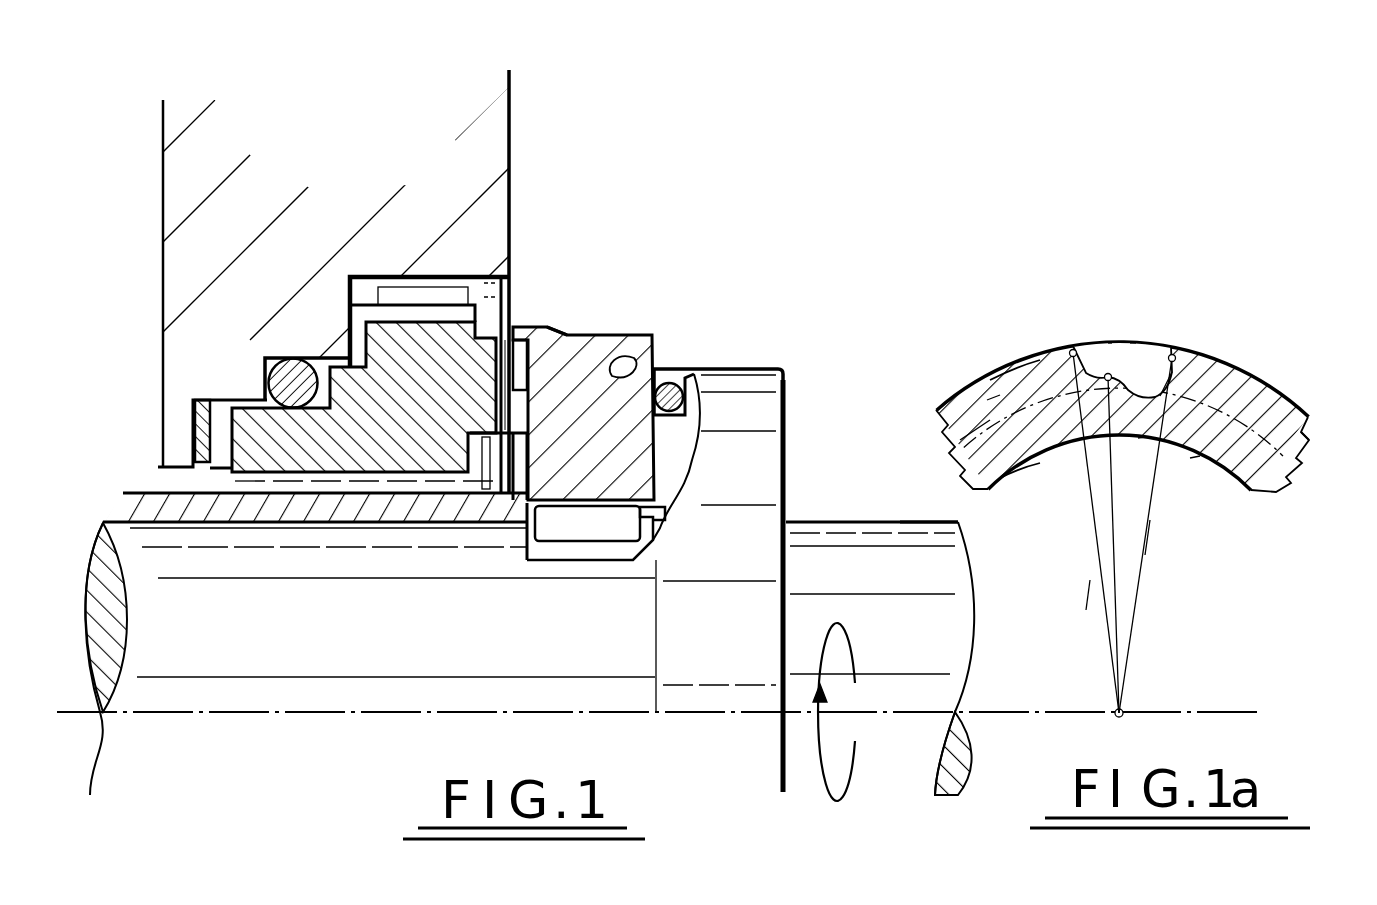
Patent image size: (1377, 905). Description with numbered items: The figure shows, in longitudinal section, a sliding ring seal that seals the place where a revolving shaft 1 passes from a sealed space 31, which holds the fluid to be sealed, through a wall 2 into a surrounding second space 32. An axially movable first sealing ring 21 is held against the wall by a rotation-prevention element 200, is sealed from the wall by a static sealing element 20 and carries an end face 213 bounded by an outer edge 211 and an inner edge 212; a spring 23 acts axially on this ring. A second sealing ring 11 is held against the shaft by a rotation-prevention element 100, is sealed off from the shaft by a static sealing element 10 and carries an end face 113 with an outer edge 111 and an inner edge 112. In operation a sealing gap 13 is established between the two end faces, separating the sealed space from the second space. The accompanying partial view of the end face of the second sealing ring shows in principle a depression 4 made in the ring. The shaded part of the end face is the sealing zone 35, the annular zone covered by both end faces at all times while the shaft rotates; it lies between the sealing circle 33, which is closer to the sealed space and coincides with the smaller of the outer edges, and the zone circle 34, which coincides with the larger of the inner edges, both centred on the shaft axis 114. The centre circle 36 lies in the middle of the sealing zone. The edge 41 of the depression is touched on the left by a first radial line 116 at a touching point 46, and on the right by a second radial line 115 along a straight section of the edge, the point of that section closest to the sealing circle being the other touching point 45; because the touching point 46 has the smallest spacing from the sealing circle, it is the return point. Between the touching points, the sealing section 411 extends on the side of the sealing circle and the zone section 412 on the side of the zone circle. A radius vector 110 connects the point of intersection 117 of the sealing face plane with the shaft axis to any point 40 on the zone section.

In FIG. 1, the revolving shaft 1 is at (150, 560).
In FIG. 1, the wall 2 is at (218, 230).
In FIG. 1, the depression 4 is at (610, 372).
In FIG. 1a, the depression 4 is at (1147, 365).
In FIG. 1, the static sealing element 10 is at (686, 403).
In FIG. 1, the second sealing ring 11 is at (660, 346).
In FIG. 1, the sealing gap 13 is at (500, 367).
In FIG. 1, the static sealing element 20 is at (303, 365).
In FIG. 1, the first sealing ring 21 is at (312, 438).
In FIG. 1, the spring 23 is at (220, 455).
In FIG. 1, the sealed space 31 is at (763, 267).
In FIG. 1a, the sealed space 31 is at (1035, 327).
In FIG. 1, the second space 32 is at (128, 362).
In FIG. 1a, the second space 32 is at (1060, 512).
In FIG. 1a, the sealing circle 33 is at (1013, 365).
In FIG. 1a, the zone circle 34 is at (1195, 460).
In FIG. 1a, the sealing zone 35 is at (987, 400).
In FIG. 1a, the centre circle 36 is at (1329, 447).
In FIG. 1a, the point on the zone section 40 is at (1140, 438).
In FIG. 1a, the edge of the depression 41 is at (1165, 352).
In FIG. 1a, the touching point 45 is at (1177, 362).
In FIG. 1a, the touching point (return point) 46 is at (1070, 350).
In FIG. 1, the rotation-prevention element 100 is at (568, 525).
In FIG. 1a, the radius vector 110 is at (1115, 560).
In FIG. 1, the outer edge 111 is at (548, 325).
In FIG. 1, the inner edge 112 is at (516, 492).
In FIG. 1, the end face 113 is at (527, 320).
In FIG. 1a, the end face 113 is at (927, 362).
In FIG. 1, the shaft axis 114 is at (926, 712).
In FIG. 1a, the second radial line 115 is at (1147, 542).
In FIG. 1a, the first radial line 116 is at (1092, 512).
In FIG. 1a, the point of intersection 117 is at (1125, 707).
In FIG. 1, the rotation-prevention element 200 is at (405, 300).
In FIG. 1, the outer edge 211 is at (510, 287).
In FIG. 1, the inner edge 212 is at (475, 490).
In FIG. 1, the end face 213 is at (484, 490).
In FIG. 1a, the sealing section 411 is at (1134, 343).
In FIG. 1a, the zone section 412 is at (1112, 343).